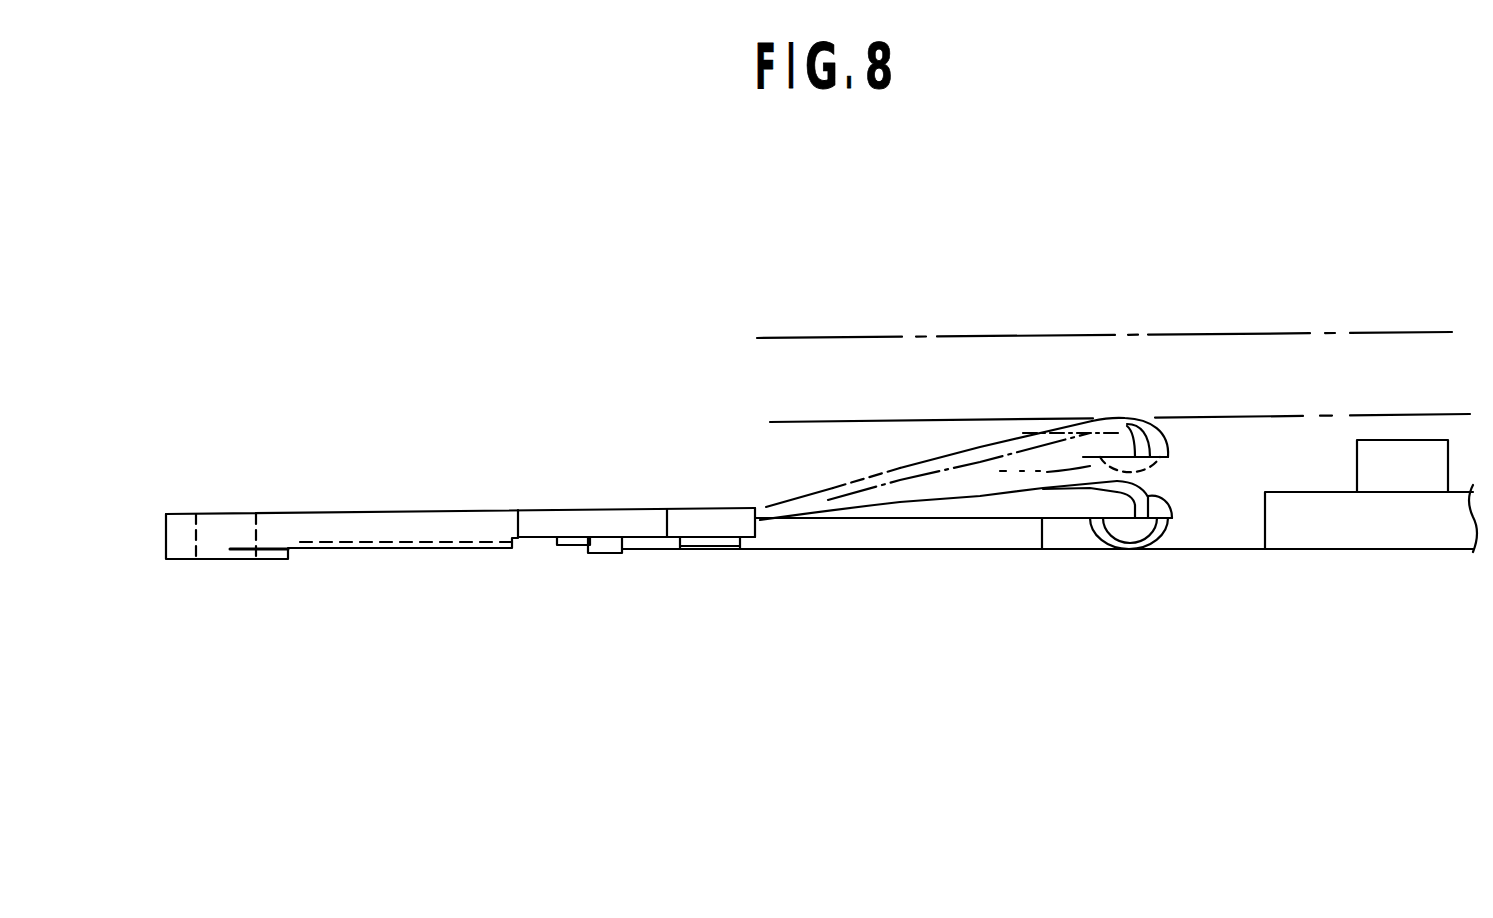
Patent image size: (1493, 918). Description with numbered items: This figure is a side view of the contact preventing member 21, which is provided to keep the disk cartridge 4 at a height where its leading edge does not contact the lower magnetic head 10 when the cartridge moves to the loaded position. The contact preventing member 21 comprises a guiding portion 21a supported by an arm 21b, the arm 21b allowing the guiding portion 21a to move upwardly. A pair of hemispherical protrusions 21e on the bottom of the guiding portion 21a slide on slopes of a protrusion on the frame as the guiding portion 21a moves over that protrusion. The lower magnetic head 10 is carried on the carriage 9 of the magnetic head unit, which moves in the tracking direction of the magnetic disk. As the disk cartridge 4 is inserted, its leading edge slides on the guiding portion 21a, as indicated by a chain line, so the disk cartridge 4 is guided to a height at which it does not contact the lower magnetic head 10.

The disk cartridge 4 is at (988, 335).
The carriage 9 is at (1380, 535).
The lower magnetic head 10 is at (1393, 453).
The contact preventing member 21 is at (866, 496).
The guiding portion 21a is at (1132, 427).
The arm 21b is at (832, 490).
The hemispherical protrusions 21e is at (1013, 470).